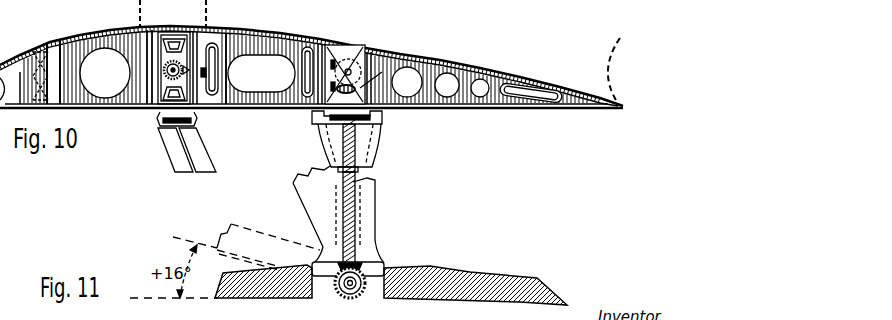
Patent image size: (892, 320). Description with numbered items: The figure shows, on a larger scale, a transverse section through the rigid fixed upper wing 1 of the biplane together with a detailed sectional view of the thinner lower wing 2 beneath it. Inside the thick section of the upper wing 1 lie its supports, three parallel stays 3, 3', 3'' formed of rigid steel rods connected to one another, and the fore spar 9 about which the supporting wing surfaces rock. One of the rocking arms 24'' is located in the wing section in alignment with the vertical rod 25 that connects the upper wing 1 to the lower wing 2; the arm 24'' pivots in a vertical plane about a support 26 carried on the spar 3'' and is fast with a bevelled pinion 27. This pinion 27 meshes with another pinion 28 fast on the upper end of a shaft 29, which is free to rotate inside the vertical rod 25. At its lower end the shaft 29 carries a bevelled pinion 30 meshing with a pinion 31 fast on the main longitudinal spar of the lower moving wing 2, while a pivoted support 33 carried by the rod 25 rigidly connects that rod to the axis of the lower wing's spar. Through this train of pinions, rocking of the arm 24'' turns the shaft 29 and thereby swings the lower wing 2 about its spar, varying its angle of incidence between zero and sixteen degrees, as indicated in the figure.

In FIG. 10, the upper wing 1 is at (246, 14).
In FIG. 11, the lower wing 2 is at (447, 268).
In FIG. 10, the stay 3 is at (42, 55).
In FIG. 10, the stay 3' is at (172, 53).
In FIG. 10, the spar 3'' is at (354, 57).
In FIG. 10, the fore spar 9 is at (383, 113).
In FIG. 10, the rocking arm 24'' is at (218, 54).
In FIG. 11, the vertical rod 25 is at (368, 217).
In FIG. 10, the support 26 is at (318, 88).
In FIG. 10, the bevelled pinion 27 is at (368, 50).
In FIG. 10, the pinion 28 is at (205, 92).
In FIG. 10, the shaft 29 is at (356, 137).
In FIG. 11, the shaft 29 is at (354, 193).
In FIG. 11, the bevelled pinion 30 is at (366, 257).
In FIG. 11, the pinion 31 is at (413, 268).
In FIG. 11, the pivoted support 33 is at (388, 276).